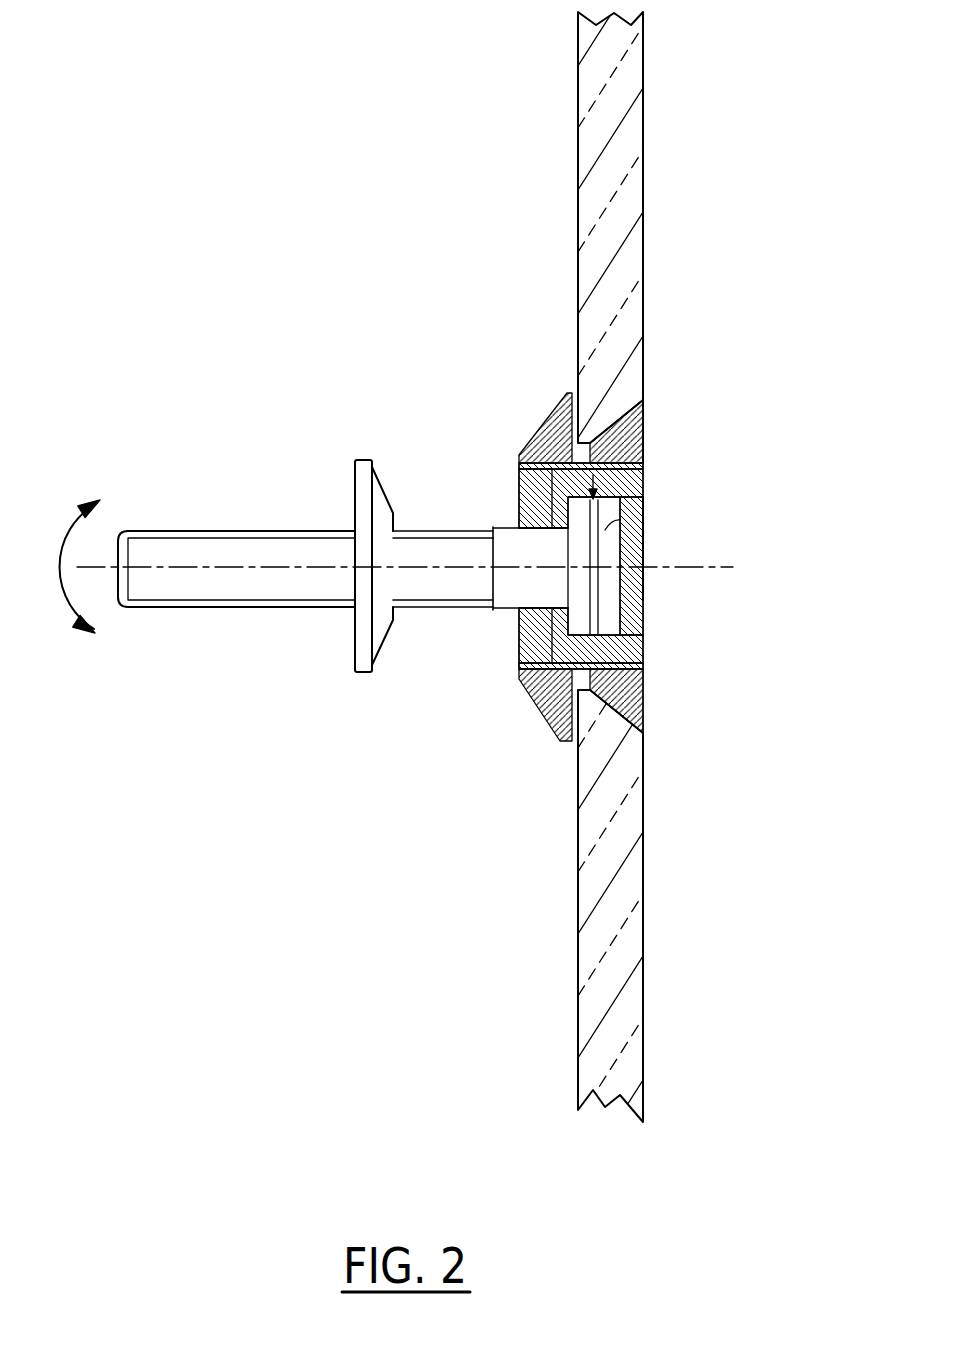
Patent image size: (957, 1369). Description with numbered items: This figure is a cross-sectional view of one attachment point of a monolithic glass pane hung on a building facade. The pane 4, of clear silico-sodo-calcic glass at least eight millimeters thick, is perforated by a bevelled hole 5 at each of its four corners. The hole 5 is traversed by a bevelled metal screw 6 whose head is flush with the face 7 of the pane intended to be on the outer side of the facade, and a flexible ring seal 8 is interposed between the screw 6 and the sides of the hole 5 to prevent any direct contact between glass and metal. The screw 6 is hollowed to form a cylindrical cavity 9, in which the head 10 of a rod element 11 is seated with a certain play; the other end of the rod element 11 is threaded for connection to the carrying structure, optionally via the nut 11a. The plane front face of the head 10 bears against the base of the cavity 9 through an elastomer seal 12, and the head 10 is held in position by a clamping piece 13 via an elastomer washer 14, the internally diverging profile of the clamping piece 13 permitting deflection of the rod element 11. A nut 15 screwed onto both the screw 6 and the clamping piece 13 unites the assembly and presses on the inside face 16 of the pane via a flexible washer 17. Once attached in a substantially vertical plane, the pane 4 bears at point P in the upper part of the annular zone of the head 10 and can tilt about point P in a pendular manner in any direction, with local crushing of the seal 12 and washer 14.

The pane 4 is at (625, 142).
The bevelled hole 5 is at (628, 410).
The metal screw 6 is at (645, 460).
The face of the pane 7 is at (645, 372).
The flexible ring seal 8 is at (647, 437).
The cylindrical cavity 9 is at (645, 653).
The head 10 is at (645, 528).
The rod element 11 is at (265, 550).
The nut 11a is at (386, 497).
The seal 12 is at (645, 547).
The clamping piece 13 is at (519, 492).
The washer 14 is at (519, 635).
The nut 15 is at (545, 425).
The inside face of the pane 16 is at (577, 303).
The flexible washer 17 is at (575, 742).
The bearing point P is at (645, 490).